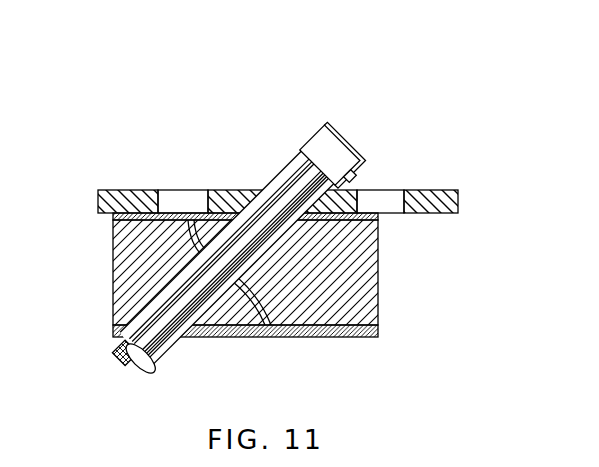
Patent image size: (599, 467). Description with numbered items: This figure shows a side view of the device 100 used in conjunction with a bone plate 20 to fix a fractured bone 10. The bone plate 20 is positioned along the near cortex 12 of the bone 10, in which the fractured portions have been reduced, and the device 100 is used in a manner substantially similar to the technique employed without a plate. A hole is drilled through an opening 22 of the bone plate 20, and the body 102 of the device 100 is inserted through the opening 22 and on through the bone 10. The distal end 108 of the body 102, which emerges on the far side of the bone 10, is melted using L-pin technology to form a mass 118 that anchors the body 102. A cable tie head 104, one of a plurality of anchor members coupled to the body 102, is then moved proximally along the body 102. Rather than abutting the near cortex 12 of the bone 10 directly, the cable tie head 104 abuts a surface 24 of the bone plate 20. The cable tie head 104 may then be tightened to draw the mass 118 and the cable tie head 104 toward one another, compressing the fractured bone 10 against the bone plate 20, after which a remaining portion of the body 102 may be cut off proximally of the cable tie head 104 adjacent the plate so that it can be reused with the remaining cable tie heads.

The bone 10 is at (407, 274).
The near cortex 12 is at (360, 211).
The bone plate 20 is at (168, 162).
The opening 22 is at (268, 190).
The surface 24 is at (427, 190).
The device 100 is at (289, 171).
The body 102 is at (182, 298).
The cable tie head 104 is at (322, 127).
The distal end 108 is at (123, 342).
The mass 118 is at (138, 367).